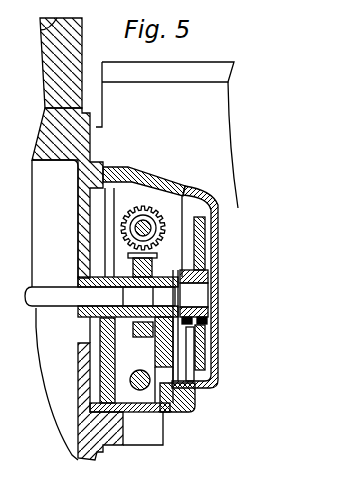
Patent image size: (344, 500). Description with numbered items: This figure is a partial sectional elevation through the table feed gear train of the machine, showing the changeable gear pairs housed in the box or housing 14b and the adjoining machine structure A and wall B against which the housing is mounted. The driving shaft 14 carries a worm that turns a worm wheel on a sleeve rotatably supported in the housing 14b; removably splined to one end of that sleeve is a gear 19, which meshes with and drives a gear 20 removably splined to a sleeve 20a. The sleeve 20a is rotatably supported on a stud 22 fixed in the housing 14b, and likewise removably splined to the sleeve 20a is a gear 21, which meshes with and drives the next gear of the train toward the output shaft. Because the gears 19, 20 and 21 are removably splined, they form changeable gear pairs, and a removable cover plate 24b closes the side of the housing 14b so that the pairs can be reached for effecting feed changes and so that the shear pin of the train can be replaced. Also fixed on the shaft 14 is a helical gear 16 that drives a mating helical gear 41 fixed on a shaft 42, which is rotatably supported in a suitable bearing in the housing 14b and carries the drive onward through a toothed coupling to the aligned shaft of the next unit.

The wall B is at (46, 62).
The body block A is at (36, 231).
The shaft 14 is at (155, 225).
The housing 14b is at (142, 175).
The helical gear 16 is at (170, 221).
The removable cover plate 24b is at (217, 235).
The gear 20 is at (206, 267).
The stud 22 is at (195, 296).
The sleeve 20a is at (206, 320).
The gear 21 is at (208, 345).
The helical gear 41 is at (143, 340).
The gear 19 is at (131, 381).
The shaft 42 is at (73, 297).